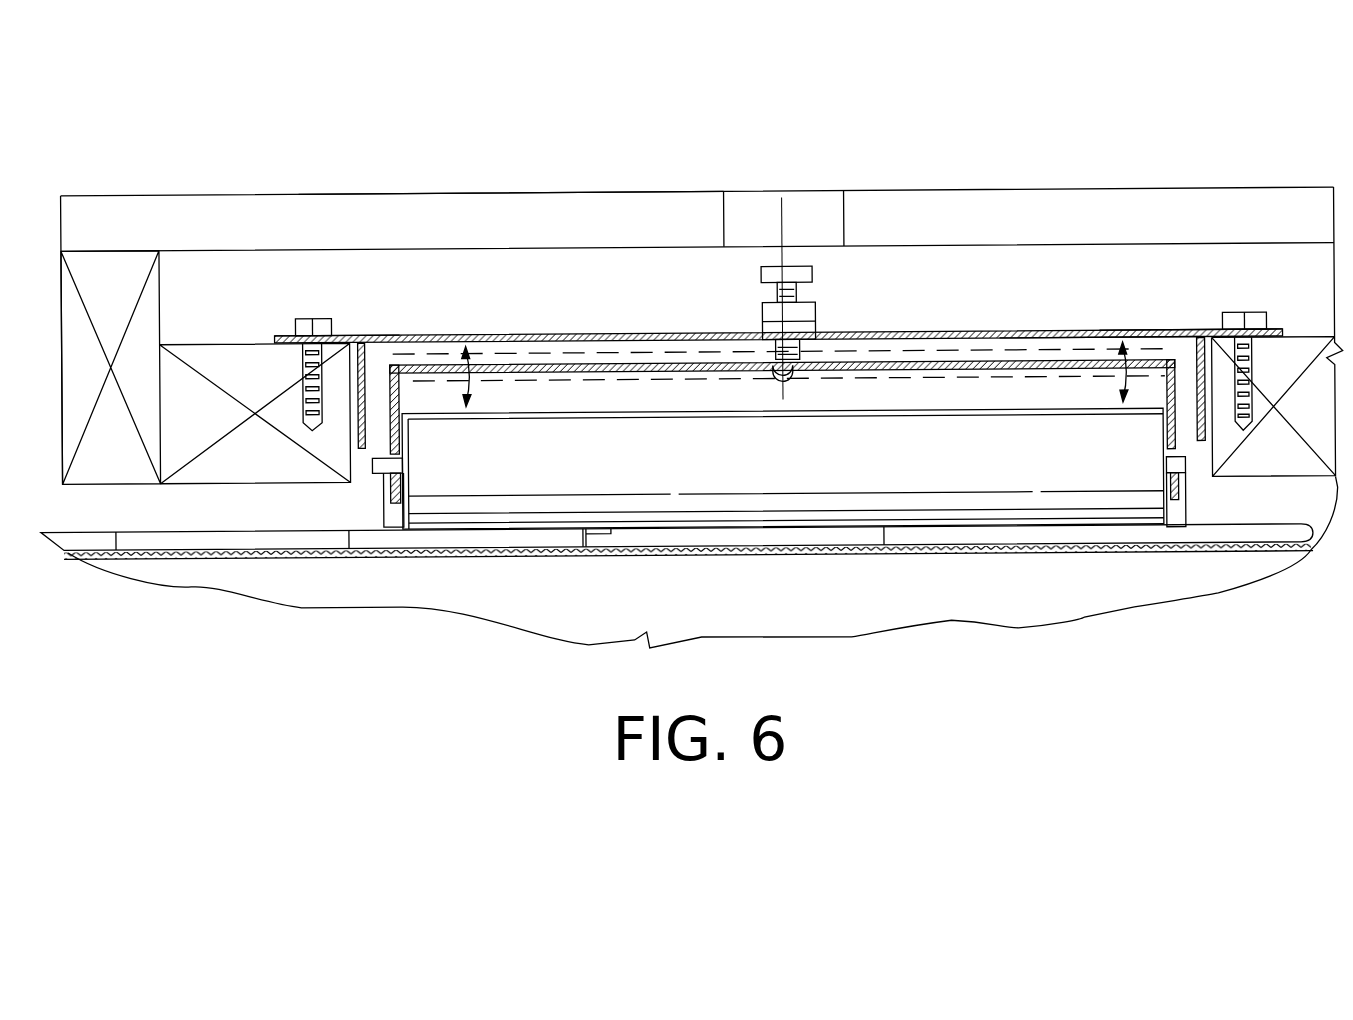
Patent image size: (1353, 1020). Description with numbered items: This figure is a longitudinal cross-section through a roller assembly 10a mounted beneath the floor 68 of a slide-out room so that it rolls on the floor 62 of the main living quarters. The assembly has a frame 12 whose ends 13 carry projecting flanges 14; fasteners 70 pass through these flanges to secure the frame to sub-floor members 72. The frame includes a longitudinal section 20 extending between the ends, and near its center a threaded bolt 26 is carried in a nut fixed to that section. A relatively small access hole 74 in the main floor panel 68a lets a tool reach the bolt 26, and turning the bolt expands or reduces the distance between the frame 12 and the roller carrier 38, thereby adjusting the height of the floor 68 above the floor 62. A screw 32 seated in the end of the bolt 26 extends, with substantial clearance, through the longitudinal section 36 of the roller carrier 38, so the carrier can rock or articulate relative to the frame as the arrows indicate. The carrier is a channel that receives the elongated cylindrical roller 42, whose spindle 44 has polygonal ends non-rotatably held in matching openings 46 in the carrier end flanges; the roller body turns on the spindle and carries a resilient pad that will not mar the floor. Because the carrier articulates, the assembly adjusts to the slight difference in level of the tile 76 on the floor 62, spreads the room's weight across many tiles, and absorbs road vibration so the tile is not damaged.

The roller assembly 10a is at (1122, 326).
The frame 12 is at (935, 329).
The ends 13 is at (1183, 333).
The flanges 14 is at (265, 334).
The longitudinal section 20 is at (1037, 330).
The threaded bolt 26 is at (813, 273).
The screw 32 is at (797, 379).
The longitudinal section 36 is at (935, 370).
The roller carrier 38 is at (1197, 448).
The cylindrical roller 42 is at (795, 459).
The spindle 44 is at (383, 471).
The openings 46 is at (1178, 423).
The floor of the main living quarters 62 is at (268, 528).
The floor 68 is at (963, 217).
The main floor panel 68a is at (545, 214).
The fasteners 70 is at (325, 322).
The sub-floor members 72 is at (218, 372).
The access hole 74 is at (848, 208).
The tile 76 is at (610, 534).